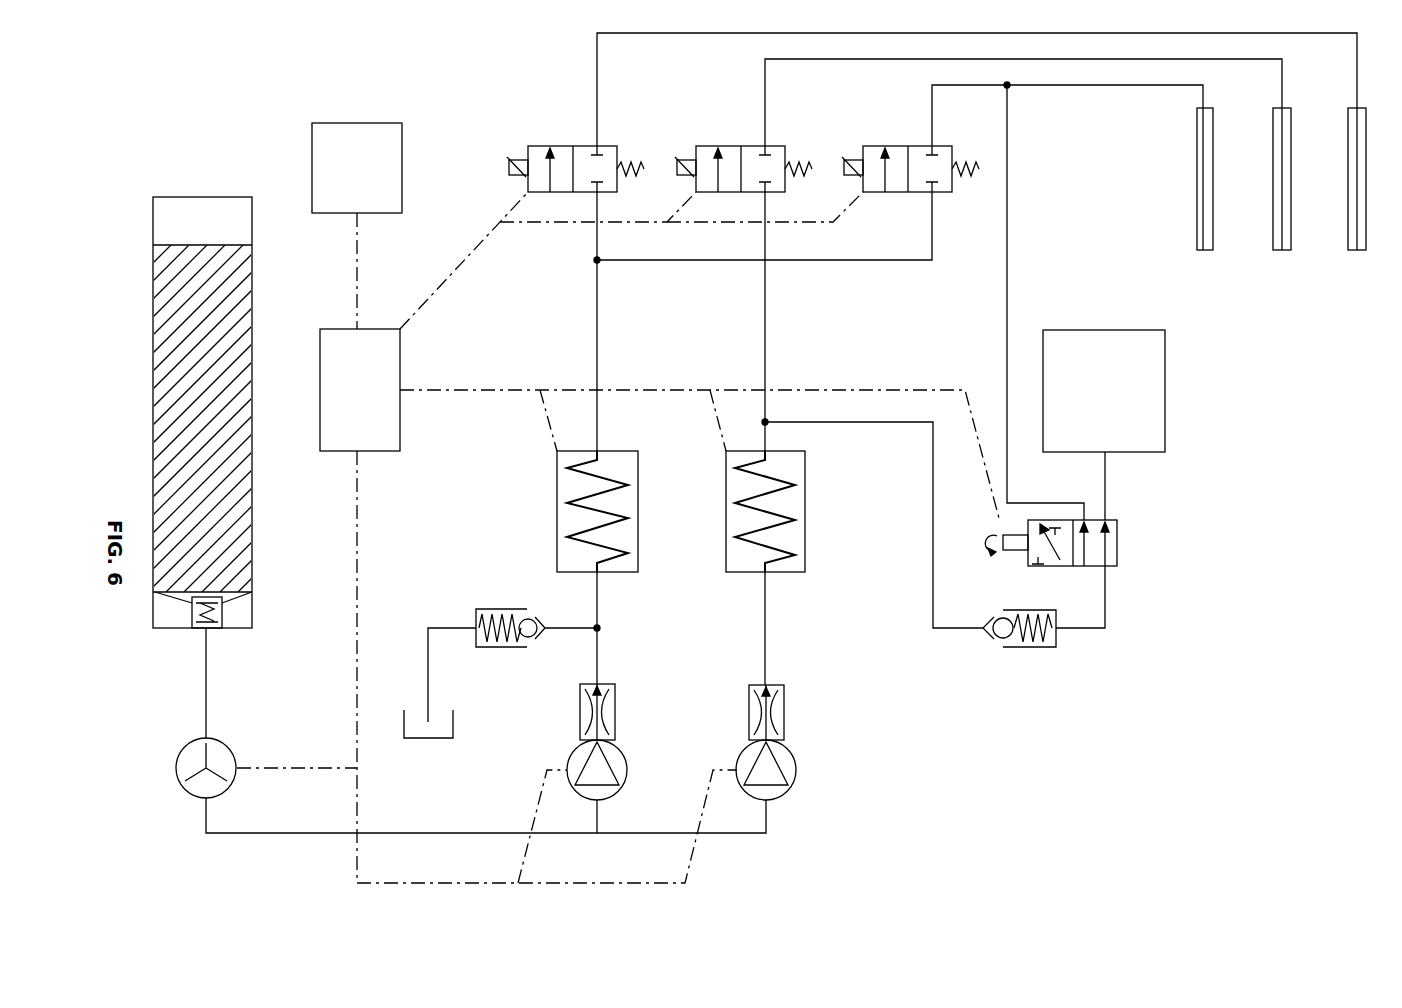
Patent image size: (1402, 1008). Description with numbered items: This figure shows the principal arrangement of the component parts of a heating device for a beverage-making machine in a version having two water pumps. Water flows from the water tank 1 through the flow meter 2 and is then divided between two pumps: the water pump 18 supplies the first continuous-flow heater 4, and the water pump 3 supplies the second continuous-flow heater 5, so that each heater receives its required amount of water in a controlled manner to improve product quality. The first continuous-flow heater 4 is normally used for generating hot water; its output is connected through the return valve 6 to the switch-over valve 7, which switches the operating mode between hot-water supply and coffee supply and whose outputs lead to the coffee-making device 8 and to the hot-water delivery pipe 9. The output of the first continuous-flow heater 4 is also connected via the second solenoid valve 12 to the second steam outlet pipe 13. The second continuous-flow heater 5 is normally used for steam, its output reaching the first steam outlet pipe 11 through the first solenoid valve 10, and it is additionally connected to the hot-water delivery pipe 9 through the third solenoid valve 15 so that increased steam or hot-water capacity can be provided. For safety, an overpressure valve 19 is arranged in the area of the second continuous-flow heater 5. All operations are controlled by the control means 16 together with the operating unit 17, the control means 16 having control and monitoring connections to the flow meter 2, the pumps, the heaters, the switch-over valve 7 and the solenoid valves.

The water tank 1 is at (200, 378).
The flow meter 2 is at (192, 760).
The water pump 3 is at (603, 770).
The first continuous-flow heater 4 is at (786, 538).
The second continuous-flow heater 5 is at (616, 538).
The return valve 6 is at (1030, 640).
The switch-over valve 7 is at (1113, 545).
The coffee-making device 8 is at (1112, 398).
The hot-water delivery pipe 9 is at (1207, 250).
The first solenoid valve 10 is at (577, 150).
The first steam outlet pipe 11 is at (1358, 250).
The second solenoid valve 12 is at (742, 150).
The second steam outlet pipe 13 is at (1285, 250).
The third solenoid valve 15 is at (908, 150).
The control means 16 is at (372, 408).
The operating unit 17 is at (368, 186).
The water pump 18 is at (767, 770).
The overpressure valve 19 is at (497, 610).